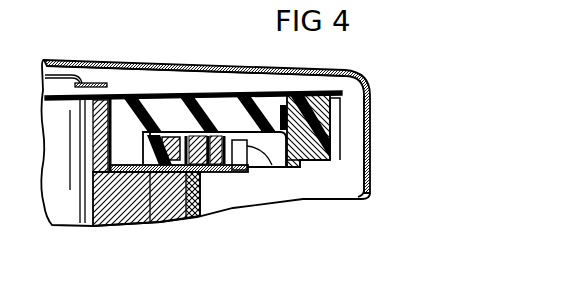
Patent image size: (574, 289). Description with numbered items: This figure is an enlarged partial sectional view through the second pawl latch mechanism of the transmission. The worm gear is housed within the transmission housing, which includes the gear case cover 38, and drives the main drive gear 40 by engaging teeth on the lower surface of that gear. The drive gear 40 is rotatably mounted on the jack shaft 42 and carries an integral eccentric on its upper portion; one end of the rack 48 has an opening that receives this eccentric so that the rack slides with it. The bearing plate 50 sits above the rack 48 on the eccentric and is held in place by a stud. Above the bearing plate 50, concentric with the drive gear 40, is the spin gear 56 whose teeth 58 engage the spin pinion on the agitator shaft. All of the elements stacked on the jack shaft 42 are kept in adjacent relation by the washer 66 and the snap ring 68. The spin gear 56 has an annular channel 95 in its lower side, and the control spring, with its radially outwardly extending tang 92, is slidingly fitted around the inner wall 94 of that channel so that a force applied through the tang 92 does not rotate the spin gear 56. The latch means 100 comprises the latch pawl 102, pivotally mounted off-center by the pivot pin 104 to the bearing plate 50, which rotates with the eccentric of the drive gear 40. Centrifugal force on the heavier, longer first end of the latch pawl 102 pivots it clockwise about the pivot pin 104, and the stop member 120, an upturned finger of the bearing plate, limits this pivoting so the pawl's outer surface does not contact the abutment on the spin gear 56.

The gear case cover 38 is at (163, 62).
The main drive gear 40 is at (115, 197).
The jack shaft 42 is at (65, 196).
The rack 48 is at (183, 210).
The bearing plate 50 is at (238, 178).
The spin gear 56 is at (203, 65).
The teeth 58 is at (338, 105).
The washer 66 is at (115, 97).
The snap ring 68 is at (90, 77).
The tang 92 is at (173, 106).
The inner wall 94 is at (150, 212).
The annular channel 95 is at (268, 115).
The latch means 100 is at (265, 174).
The latch pawl 102 is at (232, 92).
The pivot pin 104 is at (222, 185).
The stop member 120 is at (290, 168).